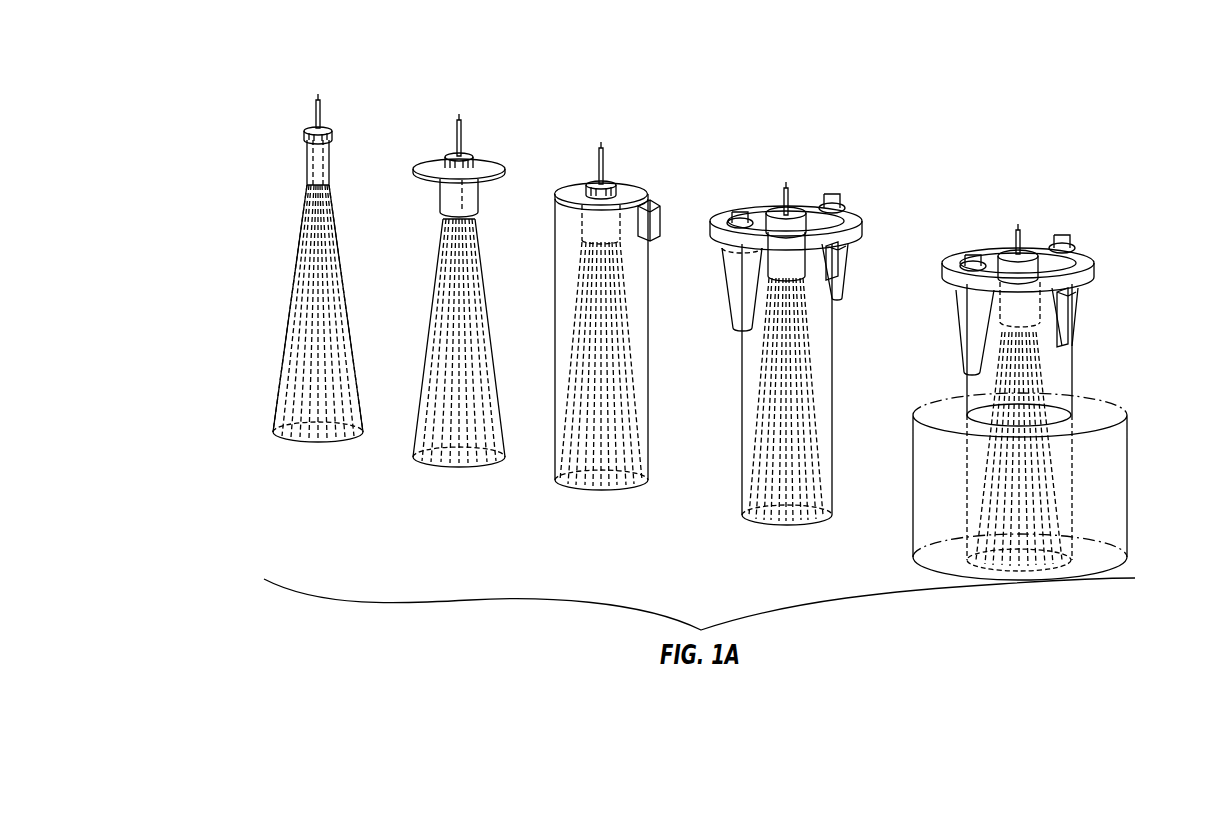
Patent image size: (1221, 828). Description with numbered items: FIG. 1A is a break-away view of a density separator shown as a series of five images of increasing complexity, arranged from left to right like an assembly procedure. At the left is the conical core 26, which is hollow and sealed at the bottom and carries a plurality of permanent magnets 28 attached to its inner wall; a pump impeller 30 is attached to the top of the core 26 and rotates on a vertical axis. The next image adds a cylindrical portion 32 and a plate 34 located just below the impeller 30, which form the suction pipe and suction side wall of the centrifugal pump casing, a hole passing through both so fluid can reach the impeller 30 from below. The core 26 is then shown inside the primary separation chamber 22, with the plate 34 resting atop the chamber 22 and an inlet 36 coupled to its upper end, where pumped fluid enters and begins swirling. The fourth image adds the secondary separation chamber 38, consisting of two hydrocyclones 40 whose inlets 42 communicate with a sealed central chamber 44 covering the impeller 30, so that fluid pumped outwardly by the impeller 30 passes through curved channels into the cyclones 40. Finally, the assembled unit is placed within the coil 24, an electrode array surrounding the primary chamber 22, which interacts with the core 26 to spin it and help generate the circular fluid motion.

The primary separation chamber 22 is at (554, 228).
The coil 24 is at (1128, 484).
The conical core 26 is at (295, 305).
The permanent magnets 28 is at (316, 364).
The pump impeller 30 is at (305, 137).
The cylindrical portion 32 is at (440, 197).
The plate 34 is at (480, 165).
The inlet 36 is at (653, 205).
The secondary separation chamber 38 is at (779, 172).
The hydrocyclones 40 is at (727, 285).
The inlets 42 is at (1015, 253).
The central chamber 44 is at (1028, 248).